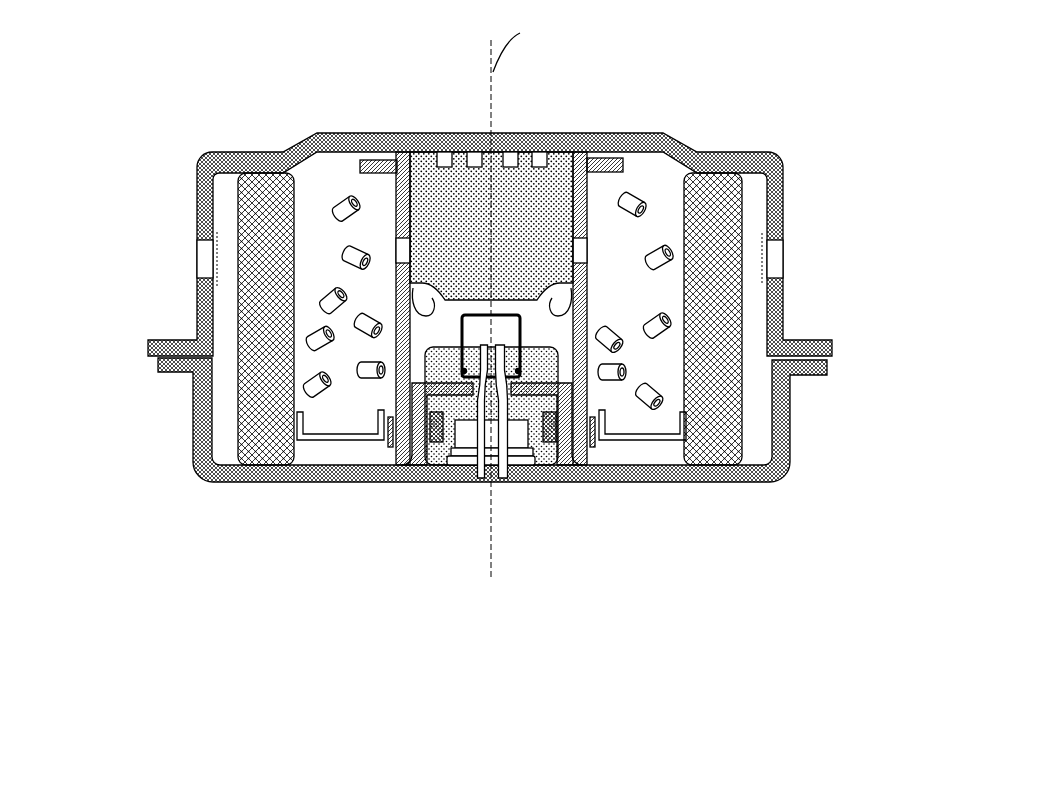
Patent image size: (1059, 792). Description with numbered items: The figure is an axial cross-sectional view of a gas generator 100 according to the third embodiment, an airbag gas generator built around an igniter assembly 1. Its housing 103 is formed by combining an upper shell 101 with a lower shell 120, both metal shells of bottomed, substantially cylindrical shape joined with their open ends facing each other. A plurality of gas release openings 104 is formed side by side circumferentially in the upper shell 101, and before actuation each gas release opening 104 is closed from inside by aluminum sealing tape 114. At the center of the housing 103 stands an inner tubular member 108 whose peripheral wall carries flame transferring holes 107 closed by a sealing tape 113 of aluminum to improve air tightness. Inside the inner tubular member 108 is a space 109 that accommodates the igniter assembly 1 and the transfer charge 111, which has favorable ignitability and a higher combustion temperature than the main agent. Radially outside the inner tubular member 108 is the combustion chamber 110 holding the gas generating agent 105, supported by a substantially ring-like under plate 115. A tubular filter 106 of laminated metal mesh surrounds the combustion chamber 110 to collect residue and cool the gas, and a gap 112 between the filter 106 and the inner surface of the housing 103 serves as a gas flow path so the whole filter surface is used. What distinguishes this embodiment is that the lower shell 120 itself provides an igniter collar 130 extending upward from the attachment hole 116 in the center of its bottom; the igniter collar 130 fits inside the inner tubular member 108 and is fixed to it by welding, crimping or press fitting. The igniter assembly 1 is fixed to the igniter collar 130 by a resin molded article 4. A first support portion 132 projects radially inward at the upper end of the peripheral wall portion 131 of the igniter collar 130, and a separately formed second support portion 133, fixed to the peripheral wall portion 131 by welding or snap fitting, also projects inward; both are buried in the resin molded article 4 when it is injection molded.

The igniter assembly 1 is at (485, 440).
The resin molded article 4 is at (546, 470).
The gas generator 100 is at (700, 96).
The upper shell 101 is at (197, 318).
The housing 103 is at (447, 307).
The gas release opening 104 is at (785, 258).
The gas generating agent 105 is at (327, 236).
The filter 106 is at (273, 187).
The flame transferring hole 107 is at (603, 132).
The inner tubular member 108 is at (562, 132).
The space 109 is at (491, 197).
The combustion chamber 110 is at (341, 173).
The transfer charge 111 is at (463, 184).
The gap 112 is at (757, 197).
The sealing tape 113 is at (389, 250).
The aluminum sealing tape 114 is at (205, 250).
The under plate 115 is at (343, 440).
The attachment hole 116 is at (550, 478).
The lower shell 120 is at (470, 420).
The igniter collar 130 is at (454, 477).
The peripheral wall portion 131 is at (412, 478).
The first support portion 132 is at (450, 462).
The second support portion 133 is at (443, 470).